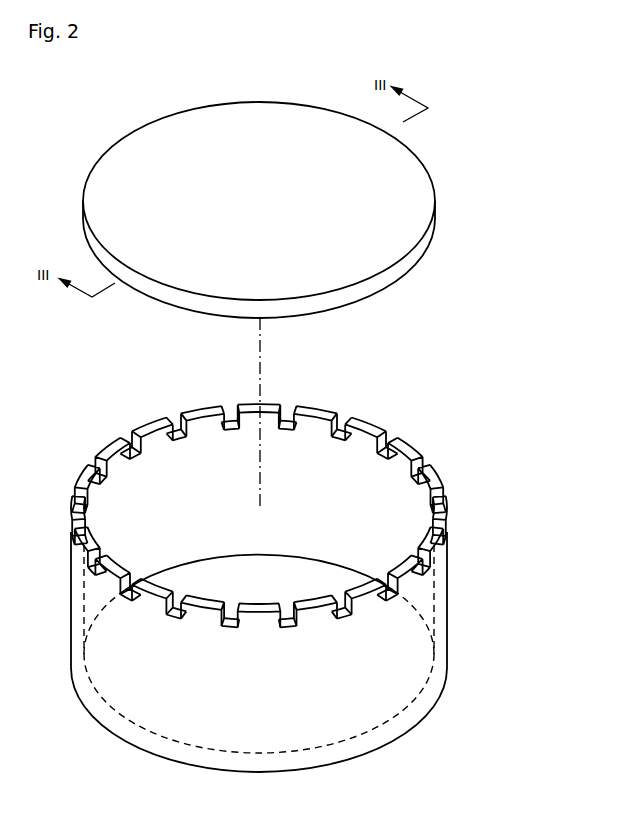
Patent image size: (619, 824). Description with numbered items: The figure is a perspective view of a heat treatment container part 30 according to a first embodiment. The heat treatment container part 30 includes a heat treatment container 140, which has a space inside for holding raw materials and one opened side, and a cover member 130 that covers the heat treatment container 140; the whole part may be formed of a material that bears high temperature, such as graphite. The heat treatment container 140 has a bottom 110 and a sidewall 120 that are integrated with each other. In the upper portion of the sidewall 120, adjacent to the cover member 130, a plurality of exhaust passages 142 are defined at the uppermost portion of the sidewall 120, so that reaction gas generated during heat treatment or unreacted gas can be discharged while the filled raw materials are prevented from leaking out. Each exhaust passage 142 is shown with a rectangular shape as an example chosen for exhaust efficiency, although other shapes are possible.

The heat treatment container part 30 is at (297, 364).
The bottom 110 is at (247, 748).
The sidewall 120 is at (447, 606).
The cover member 130 is at (377, 263).
The heat treatment container 140 is at (280, 515).
The exhaust passage 142 is at (345, 618).